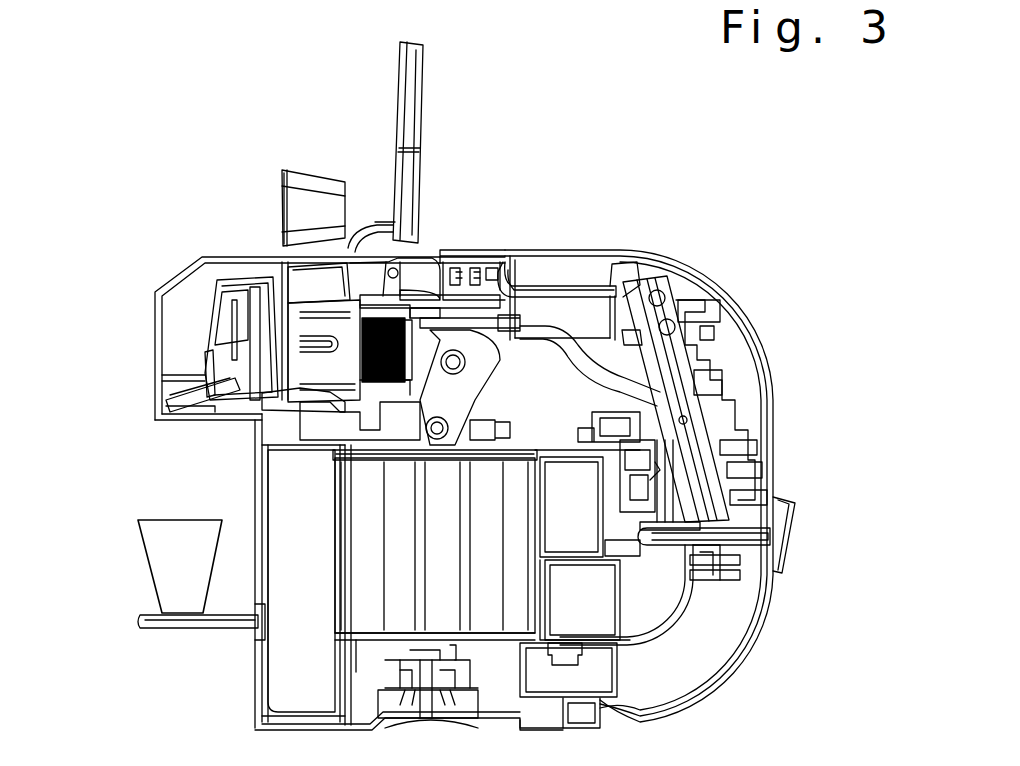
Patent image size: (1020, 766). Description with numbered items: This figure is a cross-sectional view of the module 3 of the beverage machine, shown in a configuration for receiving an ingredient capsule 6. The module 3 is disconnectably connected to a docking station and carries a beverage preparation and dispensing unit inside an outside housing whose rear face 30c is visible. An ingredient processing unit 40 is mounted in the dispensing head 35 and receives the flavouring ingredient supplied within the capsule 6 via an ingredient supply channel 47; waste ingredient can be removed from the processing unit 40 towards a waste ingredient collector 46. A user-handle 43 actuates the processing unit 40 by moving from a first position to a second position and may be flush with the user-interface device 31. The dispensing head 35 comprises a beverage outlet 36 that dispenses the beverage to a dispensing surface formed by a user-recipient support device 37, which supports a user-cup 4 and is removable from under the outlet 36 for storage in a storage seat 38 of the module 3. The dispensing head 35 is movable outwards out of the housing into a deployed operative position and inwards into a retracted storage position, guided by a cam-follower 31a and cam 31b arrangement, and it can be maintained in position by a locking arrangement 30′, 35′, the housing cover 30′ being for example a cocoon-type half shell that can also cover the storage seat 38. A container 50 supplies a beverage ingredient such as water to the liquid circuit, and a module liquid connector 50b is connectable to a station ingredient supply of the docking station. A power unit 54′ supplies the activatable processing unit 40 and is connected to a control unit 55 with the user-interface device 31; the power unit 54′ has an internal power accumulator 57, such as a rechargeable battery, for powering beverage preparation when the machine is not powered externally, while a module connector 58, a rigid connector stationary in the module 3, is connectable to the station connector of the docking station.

The module 3 is at (117, 120).
The user-cup 4 is at (162, 550).
The capsule 6 is at (307, 198).
The housing cover 30′ is at (597, 426).
The rear face 30c is at (760, 338).
The user-interface device 31 is at (447, 248).
The cam-follower 31a is at (514, 276).
The cam 31b is at (590, 277).
The dispensing head 35 is at (154, 302).
The locking arrangement 35′ is at (508, 428).
The beverage outlet 36 is at (170, 416).
The user-recipient support device 37 is at (150, 622).
The storage seat 38 is at (728, 535).
The ingredient processing unit 40 is at (200, 300).
The user-handle 43 is at (414, 123).
The waste ingredient collector 46 is at (270, 517).
The ingredient supply channel 47 is at (296, 283).
The ingredient container 50 is at (692, 666).
The module liquid connector 50b is at (598, 726).
The power unit 54′ is at (663, 490).
The control unit 55 is at (730, 418).
The internal power accumulator 57 is at (388, 607).
The module connector 58 is at (423, 708).